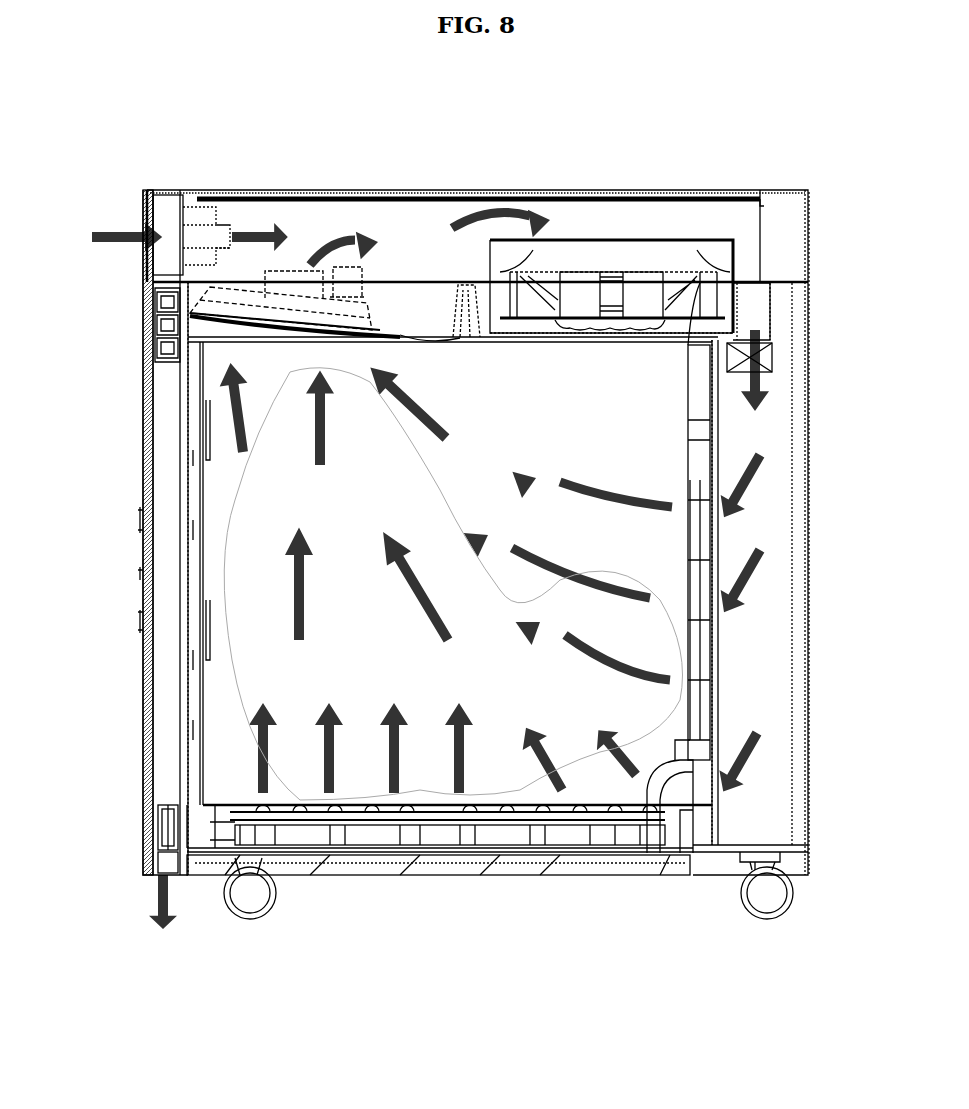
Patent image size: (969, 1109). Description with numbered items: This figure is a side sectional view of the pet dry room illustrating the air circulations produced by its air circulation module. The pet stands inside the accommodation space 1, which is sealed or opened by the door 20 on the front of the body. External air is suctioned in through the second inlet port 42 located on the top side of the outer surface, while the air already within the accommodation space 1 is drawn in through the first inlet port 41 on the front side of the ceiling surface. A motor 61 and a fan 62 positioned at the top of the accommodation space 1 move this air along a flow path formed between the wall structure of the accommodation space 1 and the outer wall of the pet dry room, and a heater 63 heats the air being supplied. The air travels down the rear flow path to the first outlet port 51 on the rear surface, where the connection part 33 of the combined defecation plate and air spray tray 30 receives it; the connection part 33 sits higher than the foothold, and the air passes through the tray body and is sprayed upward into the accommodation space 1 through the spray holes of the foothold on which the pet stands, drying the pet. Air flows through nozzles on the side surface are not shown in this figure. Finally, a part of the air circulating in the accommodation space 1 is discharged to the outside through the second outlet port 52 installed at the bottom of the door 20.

The accommodation space 1 is at (620, 441).
The door 20 is at (165, 678).
The combined defecation plate and air spray tray 30 is at (497, 833).
The connection part 33 is at (713, 722).
The first inlet port 41 is at (282, 305).
The second inlet port 42 is at (167, 210).
The first outlet port 51 is at (690, 790).
The second outlet port 52 is at (168, 818).
The motor 61 is at (583, 280).
The fan 62 is at (682, 307).
The heater 63 is at (772, 357).